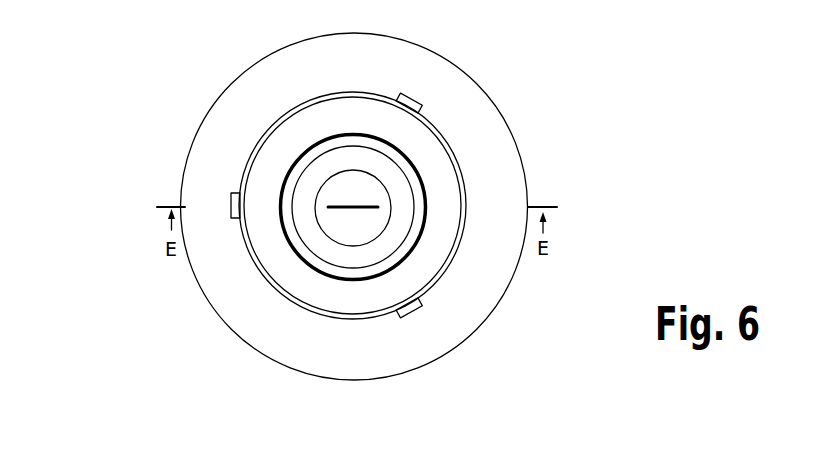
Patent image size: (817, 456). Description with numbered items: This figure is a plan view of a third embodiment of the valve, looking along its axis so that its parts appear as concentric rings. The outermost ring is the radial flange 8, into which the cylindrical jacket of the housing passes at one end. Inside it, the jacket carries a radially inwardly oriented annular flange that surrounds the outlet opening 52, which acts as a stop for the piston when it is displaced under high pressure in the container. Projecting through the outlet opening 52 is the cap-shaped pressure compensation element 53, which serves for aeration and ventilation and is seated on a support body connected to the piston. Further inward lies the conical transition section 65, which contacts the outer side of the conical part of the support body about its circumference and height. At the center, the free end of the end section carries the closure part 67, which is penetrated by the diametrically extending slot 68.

The radial flange 8 is at (470, 315).
The outlet opening 52 is at (330, 303).
The pressure compensation element 53 is at (430, 211).
The conical transition section 65 is at (303, 230).
The closure part 67 is at (360, 193).
The slot 68 is at (337, 205).